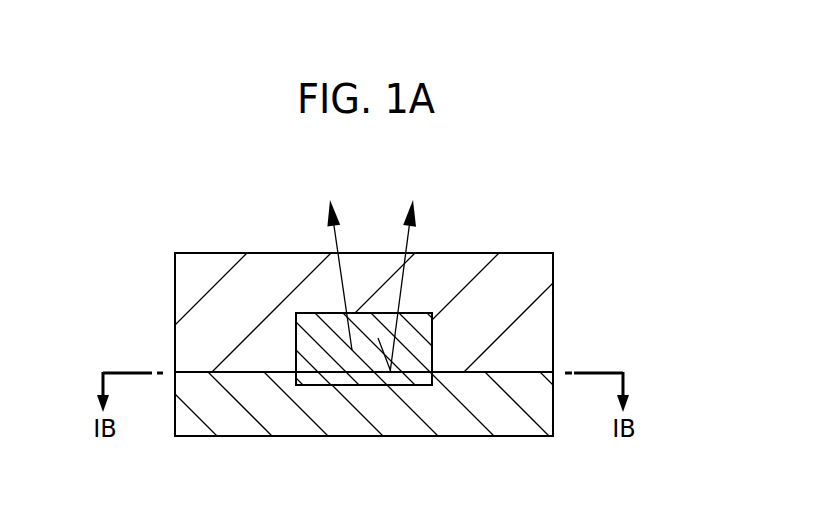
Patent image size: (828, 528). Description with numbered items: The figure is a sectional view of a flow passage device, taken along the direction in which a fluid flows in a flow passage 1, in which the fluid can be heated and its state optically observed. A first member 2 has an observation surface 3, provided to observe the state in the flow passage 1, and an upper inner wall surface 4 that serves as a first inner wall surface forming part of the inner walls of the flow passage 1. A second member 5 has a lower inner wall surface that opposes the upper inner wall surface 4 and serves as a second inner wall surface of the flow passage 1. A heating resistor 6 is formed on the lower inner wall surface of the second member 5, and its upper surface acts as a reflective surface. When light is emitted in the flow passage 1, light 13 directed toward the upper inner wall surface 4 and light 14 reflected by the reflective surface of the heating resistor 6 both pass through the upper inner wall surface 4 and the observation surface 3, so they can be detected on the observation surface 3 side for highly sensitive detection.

The flow passage 1 is at (310, 330).
The first member 2 is at (192, 290).
The observation surface 3 is at (488, 253).
The upper inner wall surface 4 is at (417, 313).
The second member 5 is at (222, 423).
The heating resistor 6 is at (398, 378).
The light 13 is at (332, 240).
The light 14 is at (400, 242).